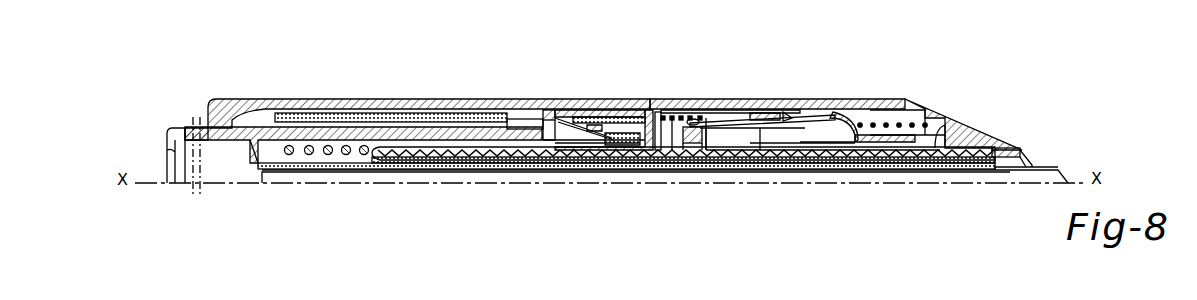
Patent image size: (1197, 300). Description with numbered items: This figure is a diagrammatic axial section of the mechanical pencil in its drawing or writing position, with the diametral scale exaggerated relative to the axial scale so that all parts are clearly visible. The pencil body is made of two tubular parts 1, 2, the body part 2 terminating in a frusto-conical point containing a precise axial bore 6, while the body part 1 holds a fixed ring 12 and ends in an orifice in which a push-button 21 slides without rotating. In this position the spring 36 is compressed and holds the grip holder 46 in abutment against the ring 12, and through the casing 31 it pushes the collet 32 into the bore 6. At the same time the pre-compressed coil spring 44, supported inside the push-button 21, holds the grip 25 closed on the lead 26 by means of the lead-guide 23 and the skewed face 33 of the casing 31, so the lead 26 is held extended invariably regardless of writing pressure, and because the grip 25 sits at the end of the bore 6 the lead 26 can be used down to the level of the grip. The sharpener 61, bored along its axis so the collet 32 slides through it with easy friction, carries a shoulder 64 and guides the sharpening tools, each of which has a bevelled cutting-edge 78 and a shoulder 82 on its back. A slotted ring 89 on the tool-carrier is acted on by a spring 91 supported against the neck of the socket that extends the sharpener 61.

The body part 1 is at (377, 103).
The body part 2 is at (748, 98).
The axial bore 6 is at (977, 151).
The ring 12 is at (550, 108).
The push-button 21 is at (191, 127).
The lead-guide 23 is at (325, 167).
The grip 25 is at (1022, 160).
The lead 26 is at (607, 176).
The casing 31 is at (520, 160).
The collet 32 is at (1023, 153).
The skewed face 33 is at (1030, 162).
The spring 36 is at (405, 158).
The coil spring 44 is at (310, 146).
The grip holder 46 is at (610, 138).
The sharpener 61 is at (862, 120).
The shoulder 64 is at (822, 115).
The bevelled cutting-edge 78 is at (802, 126).
The shoulder 82 is at (800, 117).
The ring 89 is at (701, 127).
The spring 91 is at (673, 117).